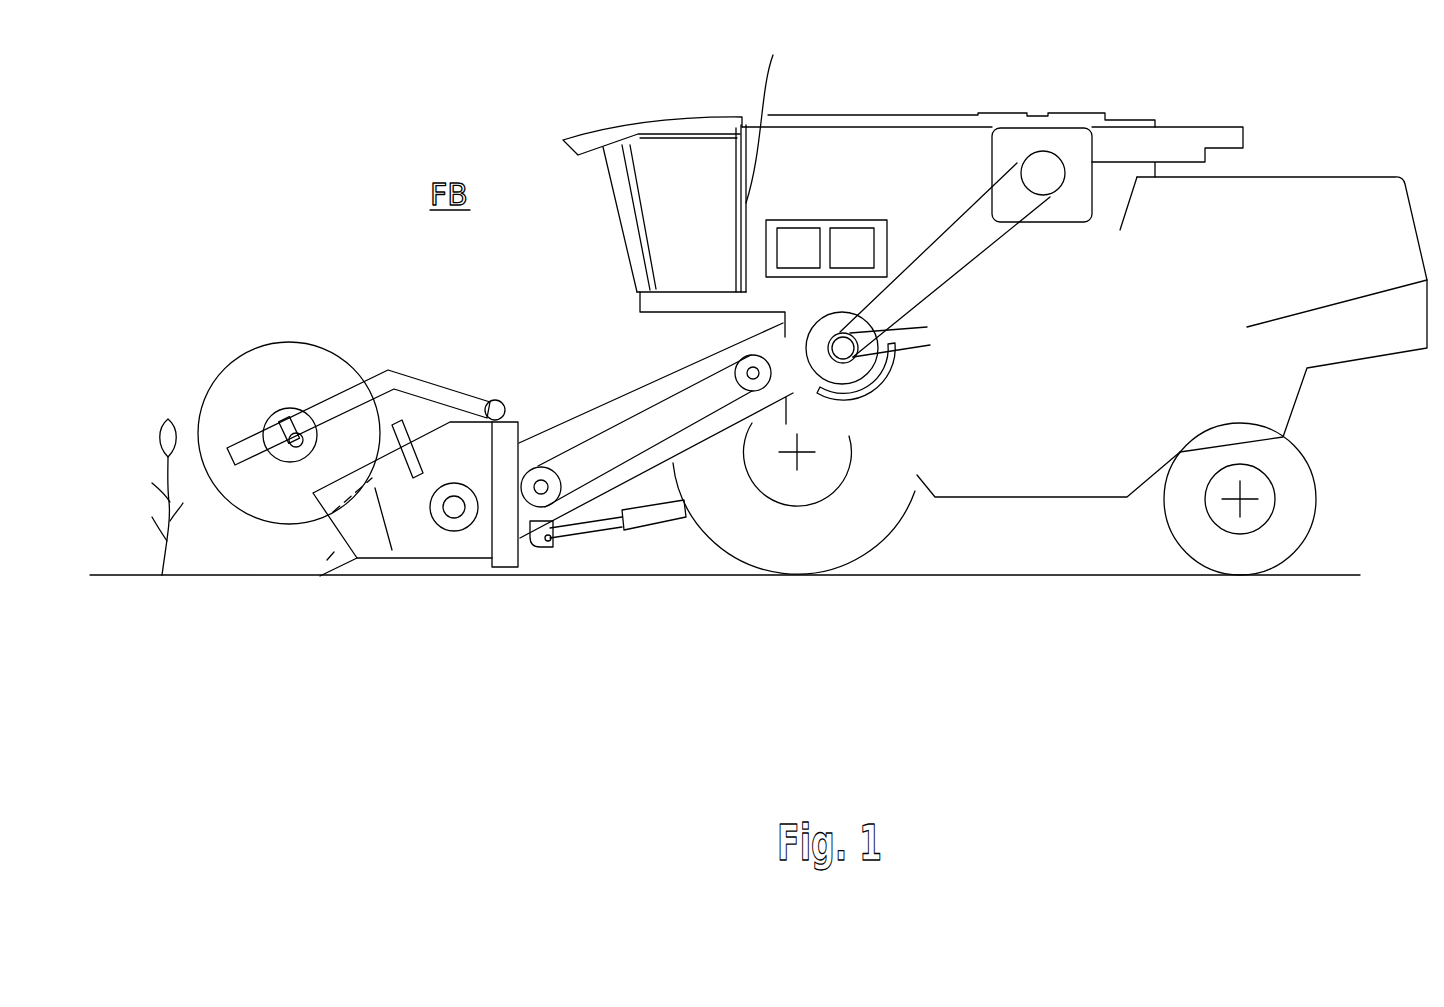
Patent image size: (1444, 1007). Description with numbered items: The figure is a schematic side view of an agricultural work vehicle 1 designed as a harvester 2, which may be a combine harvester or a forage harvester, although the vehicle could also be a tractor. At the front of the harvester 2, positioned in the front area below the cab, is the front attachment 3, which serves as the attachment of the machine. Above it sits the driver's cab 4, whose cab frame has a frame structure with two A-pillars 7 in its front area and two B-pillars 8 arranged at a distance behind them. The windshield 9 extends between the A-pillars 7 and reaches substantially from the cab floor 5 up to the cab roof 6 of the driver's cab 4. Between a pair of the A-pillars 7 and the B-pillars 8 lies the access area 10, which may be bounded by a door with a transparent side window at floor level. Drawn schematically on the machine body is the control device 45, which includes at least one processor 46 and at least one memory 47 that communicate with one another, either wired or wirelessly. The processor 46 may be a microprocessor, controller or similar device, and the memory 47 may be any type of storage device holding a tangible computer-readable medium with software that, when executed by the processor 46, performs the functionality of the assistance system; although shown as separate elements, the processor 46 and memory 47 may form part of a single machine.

The agricultural work vehicle 1 is at (812, 301).
The harvester 2 is at (312, 146).
The front attachment 3 is at (424, 352).
The driver's cab 4 is at (574, 114).
The cab floor 5 is at (638, 305).
The cab roof 6 is at (645, 130).
The A-pillars 7 is at (640, 213).
The B-pillars 8 is at (770, 119).
The windshield 9 is at (617, 168).
The access area 10 is at (683, 157).
The control device 45 is at (865, 218).
The processor 46 is at (798, 248).
The memory 47 is at (852, 248).